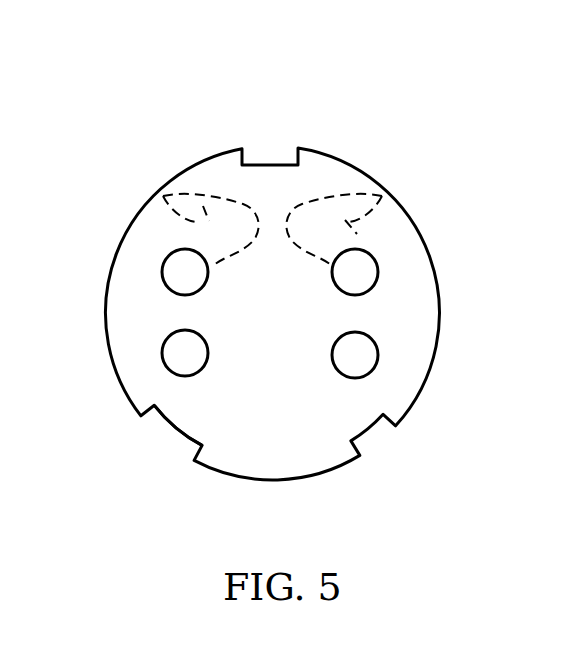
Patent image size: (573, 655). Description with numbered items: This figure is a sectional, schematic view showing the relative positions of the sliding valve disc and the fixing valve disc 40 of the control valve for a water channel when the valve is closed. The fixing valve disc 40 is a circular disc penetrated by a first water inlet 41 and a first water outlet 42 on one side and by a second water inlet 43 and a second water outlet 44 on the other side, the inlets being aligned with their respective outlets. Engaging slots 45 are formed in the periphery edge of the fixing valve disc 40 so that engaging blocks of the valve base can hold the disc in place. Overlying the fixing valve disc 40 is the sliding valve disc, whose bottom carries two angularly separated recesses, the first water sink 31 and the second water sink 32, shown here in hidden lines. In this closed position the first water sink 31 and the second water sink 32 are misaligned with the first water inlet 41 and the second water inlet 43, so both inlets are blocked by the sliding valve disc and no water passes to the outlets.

The fixing valve disc 40 is at (323, 148).
The first water sink 31 is at (161, 200).
The second water sink 32 is at (392, 213).
The first water inlet 41 is at (167, 355).
The first water outlet 42 is at (181, 274).
The second water inlet 43 is at (365, 358).
The second water outlet 44 is at (369, 272).
The engaging slots 45 is at (177, 438).